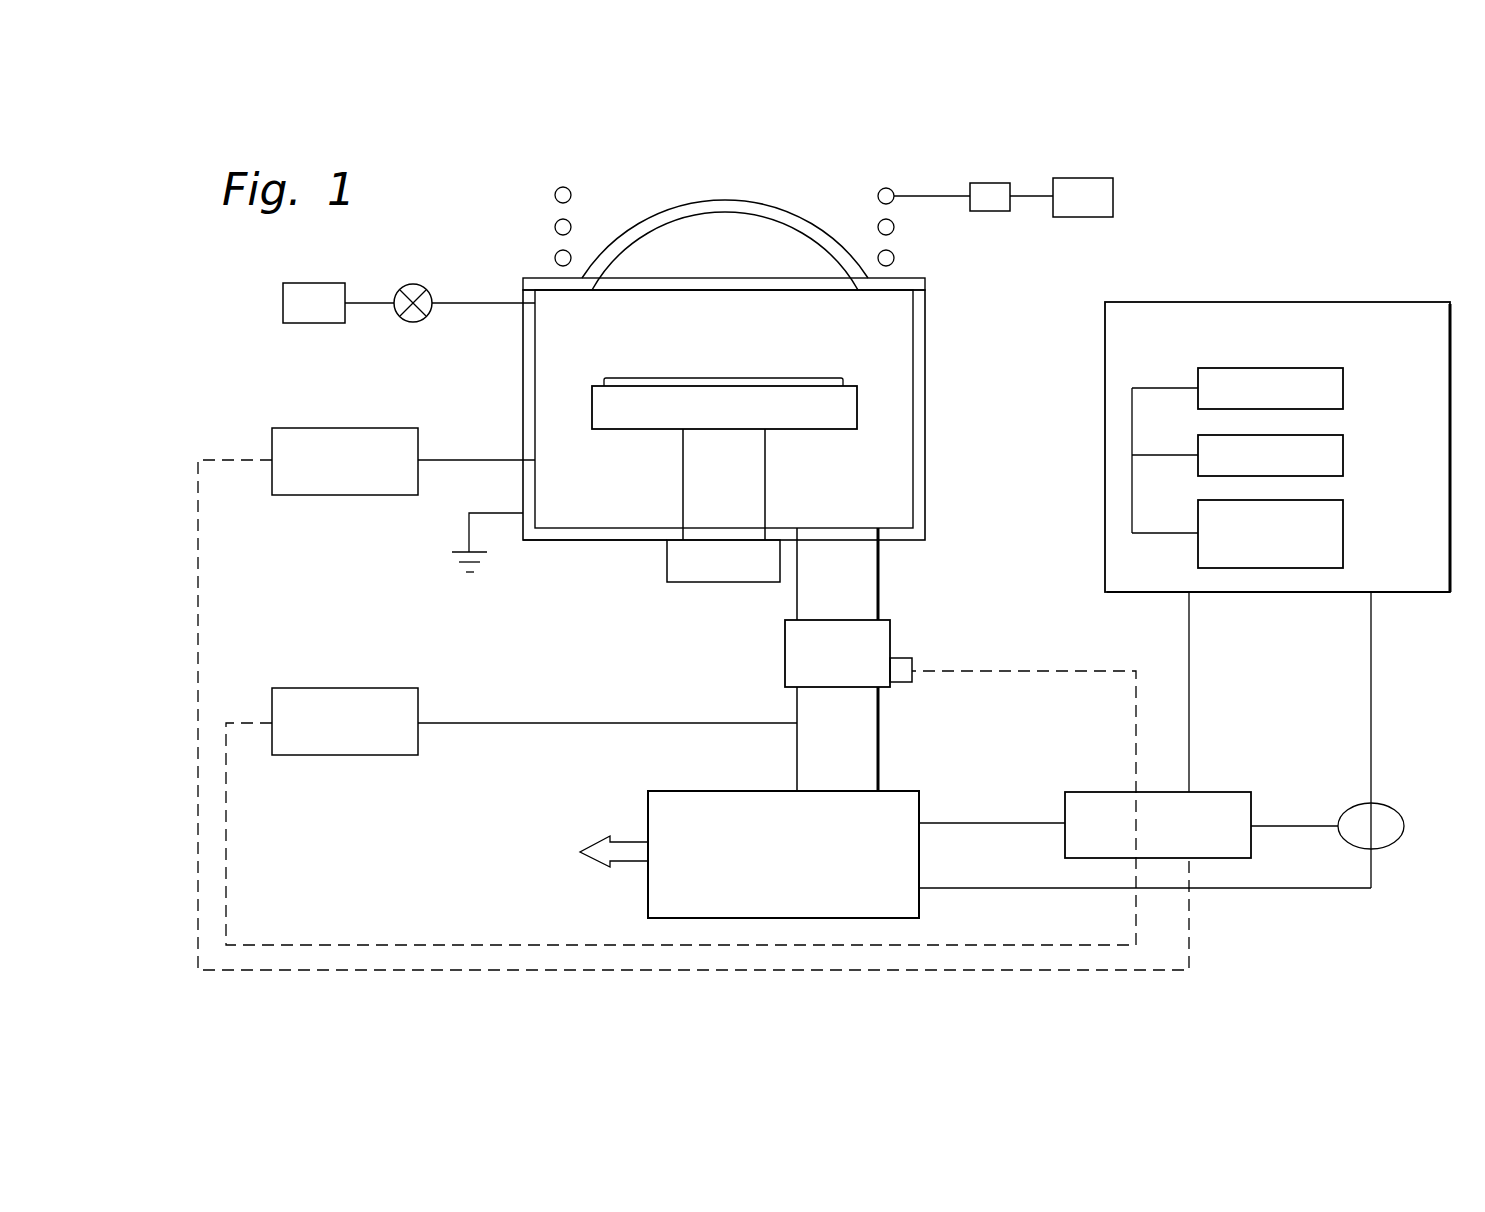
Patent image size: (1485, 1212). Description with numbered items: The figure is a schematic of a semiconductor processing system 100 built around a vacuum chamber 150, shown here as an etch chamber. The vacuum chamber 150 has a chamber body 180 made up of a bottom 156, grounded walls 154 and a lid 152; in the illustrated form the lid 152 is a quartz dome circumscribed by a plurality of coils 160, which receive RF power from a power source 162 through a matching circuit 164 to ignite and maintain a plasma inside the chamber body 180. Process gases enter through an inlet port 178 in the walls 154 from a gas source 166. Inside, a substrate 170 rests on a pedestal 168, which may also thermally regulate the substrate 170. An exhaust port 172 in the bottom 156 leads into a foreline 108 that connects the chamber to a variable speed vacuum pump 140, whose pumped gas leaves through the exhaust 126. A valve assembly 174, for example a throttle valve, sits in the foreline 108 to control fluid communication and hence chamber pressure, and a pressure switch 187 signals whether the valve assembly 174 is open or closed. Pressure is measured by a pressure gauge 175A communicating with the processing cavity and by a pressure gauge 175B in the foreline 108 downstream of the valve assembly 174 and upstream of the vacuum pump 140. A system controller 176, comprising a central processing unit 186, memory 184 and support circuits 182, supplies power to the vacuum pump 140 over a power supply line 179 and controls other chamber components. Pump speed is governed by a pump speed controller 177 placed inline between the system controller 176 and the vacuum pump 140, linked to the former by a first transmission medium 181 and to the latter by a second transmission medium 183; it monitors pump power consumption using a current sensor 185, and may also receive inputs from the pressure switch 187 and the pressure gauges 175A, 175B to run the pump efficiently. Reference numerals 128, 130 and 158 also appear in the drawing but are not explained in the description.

The semiconductor processing system 100 is at (1436, 199).
The foreline 108 is at (880, 576).
The exhaust 126 is at (582, 847).
The pedestal base 128 is at (685, 583).
The gas valve 130 is at (413, 284).
The vacuum pump 140 is at (732, 791).
The vacuum chamber 150 is at (1263, 220).
The lid 152 is at (765, 200).
The walls 154 is at (523, 392).
The bottom 156 is at (651, 540).
The process region 158 is at (668, 243).
The coils 160 is at (896, 228).
The power source 162 is at (1113, 193).
The matching circuit 164 is at (988, 183).
The gas source 166 is at (283, 303).
The pedestal 168 is at (630, 435).
The substrate 170 is at (719, 378).
The exhaust port 172 is at (843, 500).
The valve assembly 174 is at (785, 632).
The pressure gauge 175A is at (367, 428).
The pressure gauge 175B is at (367, 688).
The system controller 176 is at (1372, 302).
The pump speed controller 177 is at (1218, 792).
The inlet ports 178 is at (530, 305).
The power supply line 179 is at (1275, 888).
The chamber body 180 is at (948, 326).
The first transmission medium 181 is at (1189, 690).
The support circuits 182 is at (1343, 527).
The second transmission medium 183 is at (993, 822).
The memory 184 is at (1343, 448).
The current sensor 185 is at (1385, 805).
The central processing unit 186 is at (1343, 380).
The pressure switch 187 is at (905, 656).